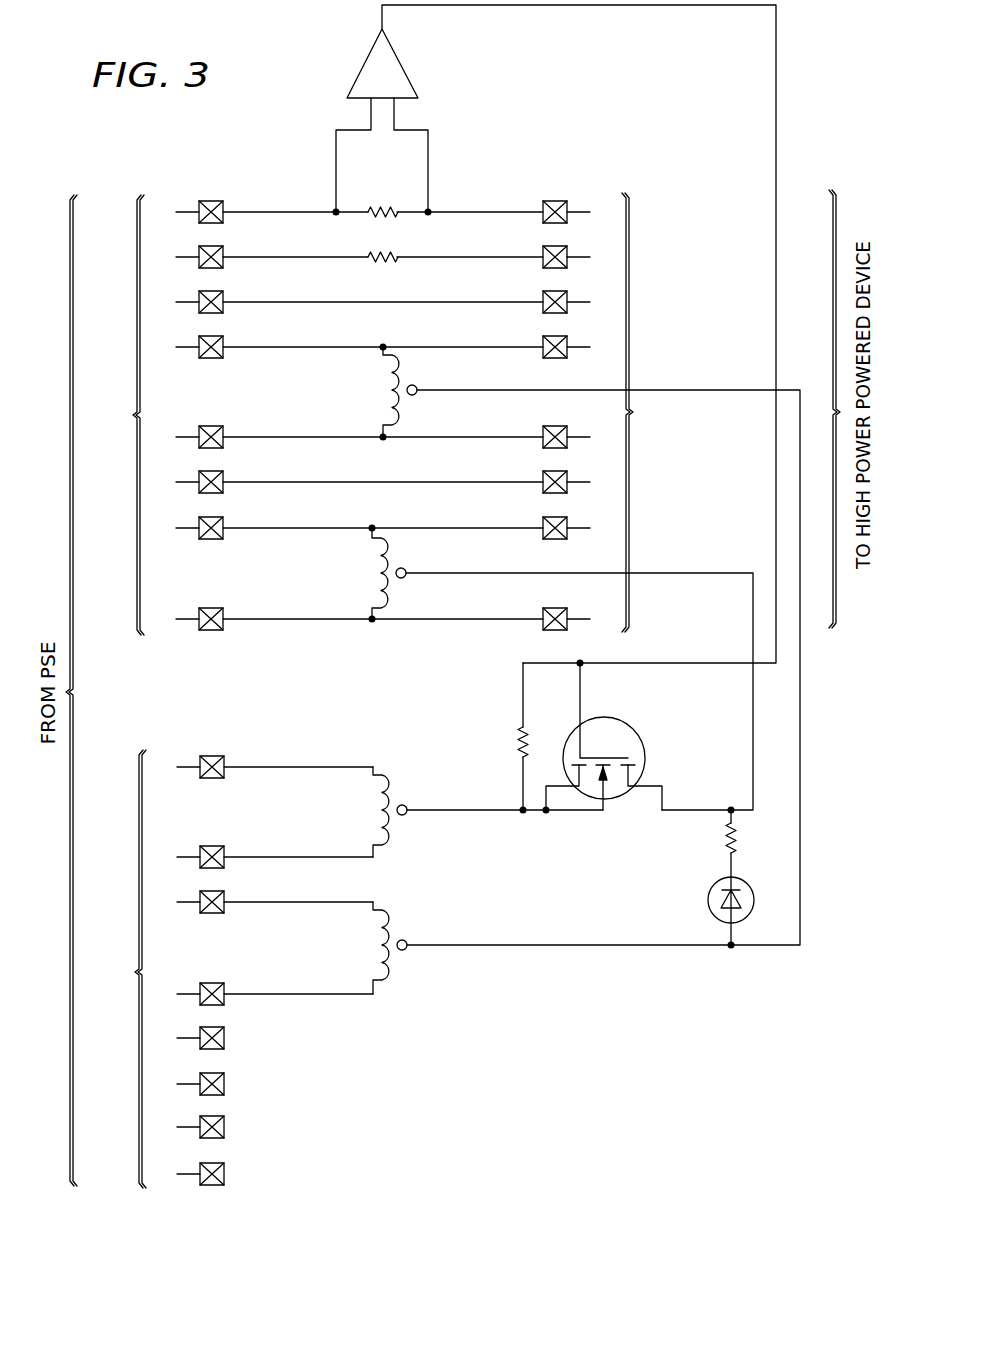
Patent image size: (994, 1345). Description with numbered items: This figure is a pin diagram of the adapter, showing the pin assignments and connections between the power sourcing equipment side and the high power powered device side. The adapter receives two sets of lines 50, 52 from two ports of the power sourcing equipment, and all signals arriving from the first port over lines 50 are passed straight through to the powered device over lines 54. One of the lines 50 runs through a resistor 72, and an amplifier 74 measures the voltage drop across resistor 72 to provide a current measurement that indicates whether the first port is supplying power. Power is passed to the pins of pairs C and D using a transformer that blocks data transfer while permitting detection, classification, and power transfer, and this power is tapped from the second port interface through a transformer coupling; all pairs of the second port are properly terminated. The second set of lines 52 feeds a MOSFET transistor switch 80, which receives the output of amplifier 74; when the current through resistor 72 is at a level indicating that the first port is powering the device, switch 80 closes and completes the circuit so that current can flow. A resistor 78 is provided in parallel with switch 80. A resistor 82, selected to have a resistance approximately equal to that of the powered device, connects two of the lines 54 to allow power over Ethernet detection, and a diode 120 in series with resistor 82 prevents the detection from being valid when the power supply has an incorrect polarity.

The lines 50 is at (159, 415).
The lines 52 is at (161, 969).
The lines 54 is at (607, 412).
The resistor 72 is at (380, 206).
The amplifier 74 is at (362, 62).
The resistor 78 is at (516, 744).
The switch 80 is at (636, 727).
The resistor 82 is at (727, 843).
The diode 120 is at (707, 900).